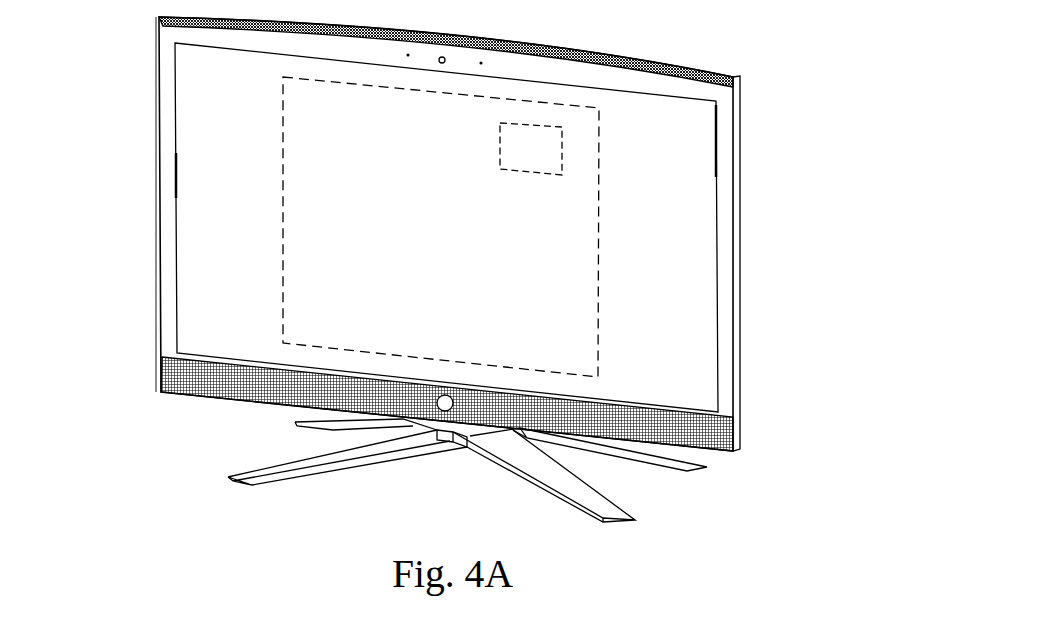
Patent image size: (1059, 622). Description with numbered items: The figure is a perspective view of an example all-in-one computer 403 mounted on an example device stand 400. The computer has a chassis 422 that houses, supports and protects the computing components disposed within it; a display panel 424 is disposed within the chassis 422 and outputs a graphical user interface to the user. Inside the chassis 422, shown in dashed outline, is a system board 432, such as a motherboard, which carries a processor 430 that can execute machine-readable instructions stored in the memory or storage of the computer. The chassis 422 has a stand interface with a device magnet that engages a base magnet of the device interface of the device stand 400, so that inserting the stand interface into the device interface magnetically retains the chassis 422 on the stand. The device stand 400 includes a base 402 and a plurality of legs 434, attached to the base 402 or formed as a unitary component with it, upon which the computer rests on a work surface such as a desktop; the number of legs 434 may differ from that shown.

The computing device 403 is at (818, 62).
The chassis 422 is at (159, 121).
The display panel 424 is at (246, 115).
The system board 432 is at (283, 226).
The processor 430 is at (500, 140).
The device stand 400 is at (258, 443).
The base 402 is at (413, 425).
The legs 434 is at (610, 497).